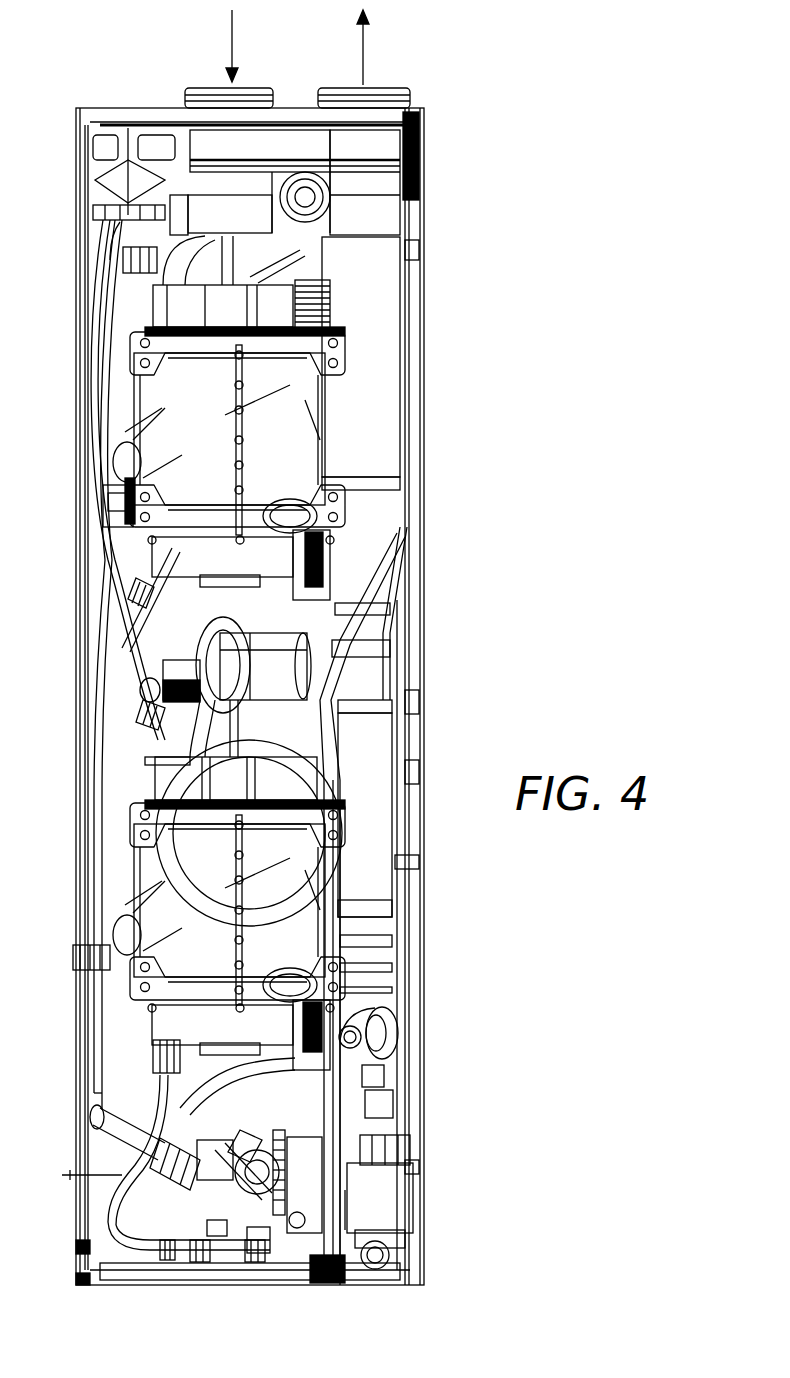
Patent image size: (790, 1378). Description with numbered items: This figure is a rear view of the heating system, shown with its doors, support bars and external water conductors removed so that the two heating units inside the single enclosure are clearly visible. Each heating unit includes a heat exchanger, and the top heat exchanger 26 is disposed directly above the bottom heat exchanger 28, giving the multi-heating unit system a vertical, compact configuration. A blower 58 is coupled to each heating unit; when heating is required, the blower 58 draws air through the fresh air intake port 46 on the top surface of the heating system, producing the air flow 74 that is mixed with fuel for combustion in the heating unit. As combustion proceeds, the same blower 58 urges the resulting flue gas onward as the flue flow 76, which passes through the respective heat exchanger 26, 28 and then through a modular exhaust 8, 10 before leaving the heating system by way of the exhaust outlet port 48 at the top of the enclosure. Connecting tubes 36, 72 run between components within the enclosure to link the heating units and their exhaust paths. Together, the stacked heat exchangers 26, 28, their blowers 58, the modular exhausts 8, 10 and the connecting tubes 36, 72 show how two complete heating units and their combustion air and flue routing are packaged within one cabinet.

The modular exhaust 8 is at (380, 575).
The modular exhaust 10 is at (385, 1043).
The top heat exchanger 26 is at (172, 400).
The bottom heat exchanger 28 is at (157, 870).
The connecting tube 36 is at (390, 690).
The fresh air intake port 46 is at (205, 88).
The exhaust outlet port 48 is at (345, 88).
The blower 58 is at (327, 215).
The connecting tube 72 is at (390, 398).
The air flow 74 is at (235, 52).
The flue flow 76 is at (365, 52).